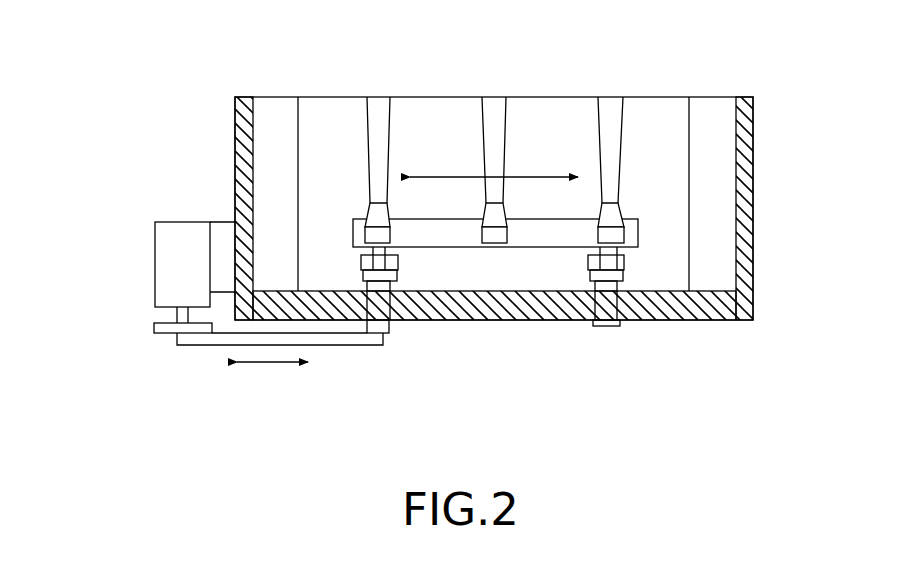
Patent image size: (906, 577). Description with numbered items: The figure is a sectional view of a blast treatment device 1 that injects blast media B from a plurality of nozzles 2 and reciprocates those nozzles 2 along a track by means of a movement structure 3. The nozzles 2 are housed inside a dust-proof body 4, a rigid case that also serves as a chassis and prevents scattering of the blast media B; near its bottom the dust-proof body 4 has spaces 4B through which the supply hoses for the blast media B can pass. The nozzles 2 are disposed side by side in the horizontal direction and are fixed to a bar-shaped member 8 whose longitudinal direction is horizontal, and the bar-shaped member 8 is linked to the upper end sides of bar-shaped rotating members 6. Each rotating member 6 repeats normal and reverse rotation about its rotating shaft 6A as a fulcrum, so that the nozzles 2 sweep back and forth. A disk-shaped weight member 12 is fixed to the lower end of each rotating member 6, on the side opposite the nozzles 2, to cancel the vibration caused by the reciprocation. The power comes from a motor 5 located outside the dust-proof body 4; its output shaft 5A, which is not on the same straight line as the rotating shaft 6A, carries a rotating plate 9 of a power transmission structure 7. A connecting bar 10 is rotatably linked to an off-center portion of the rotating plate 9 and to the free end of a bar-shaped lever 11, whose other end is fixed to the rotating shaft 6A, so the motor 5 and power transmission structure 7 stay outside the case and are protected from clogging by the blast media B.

The blast treatment device 1 is at (200, 148).
The blast media B is at (361, 122).
The nozzle 2 is at (368, 218).
The movement structure 3 is at (630, 212).
The dust-proof body 4 is at (755, 186).
The spaces 4B is at (714, 115).
The motor 5 is at (153, 262).
The output shaft 5A is at (176, 318).
The rotating member 6 is at (358, 270).
The rotating shaft 6A is at (622, 285).
The power transmission structure 7 is at (293, 399).
The bar-shaped member 8 is at (470, 250).
The rotating plate 9 is at (167, 335).
The connecting bar 10 is at (320, 347).
The lever 11 is at (392, 370).
The weight member 12 is at (400, 265).